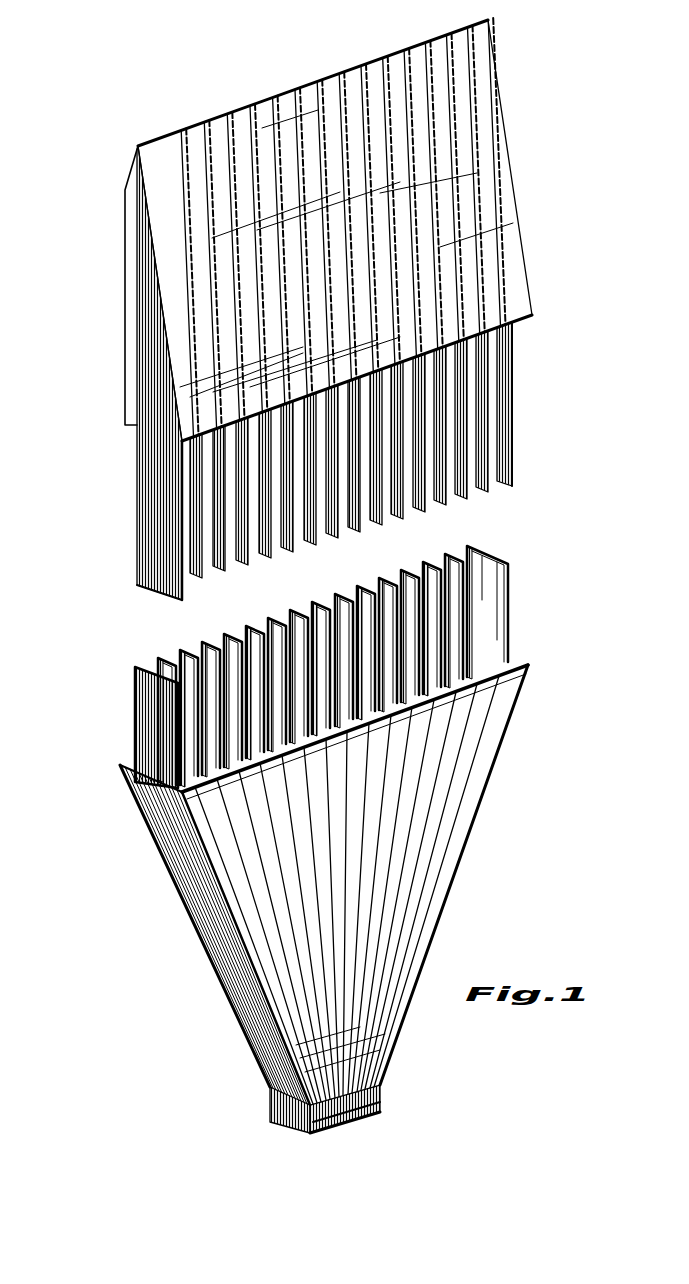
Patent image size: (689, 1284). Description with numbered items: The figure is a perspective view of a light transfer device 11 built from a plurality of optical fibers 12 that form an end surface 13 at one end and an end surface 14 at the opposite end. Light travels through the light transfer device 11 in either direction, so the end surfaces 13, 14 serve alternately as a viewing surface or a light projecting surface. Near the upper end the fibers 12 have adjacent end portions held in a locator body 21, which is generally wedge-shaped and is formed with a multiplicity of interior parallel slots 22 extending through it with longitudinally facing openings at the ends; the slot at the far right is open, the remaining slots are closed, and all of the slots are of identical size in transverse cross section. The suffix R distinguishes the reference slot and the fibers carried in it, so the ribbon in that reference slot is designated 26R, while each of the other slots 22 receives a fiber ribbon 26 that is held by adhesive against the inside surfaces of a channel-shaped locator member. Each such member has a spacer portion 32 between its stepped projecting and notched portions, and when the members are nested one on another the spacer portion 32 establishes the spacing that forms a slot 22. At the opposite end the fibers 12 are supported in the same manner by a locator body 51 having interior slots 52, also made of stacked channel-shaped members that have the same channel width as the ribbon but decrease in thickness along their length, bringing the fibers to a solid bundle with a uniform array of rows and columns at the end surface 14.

The light transfer device 11 is at (328, 309).
The optical fibers 12 is at (523, 414).
The end surface 13 is at (356, 229).
The end surface 14 is at (281, 1129).
The locator body 21 is at (112, 365).
The interior parallel slots 22 is at (253, 134).
The fiber ribbon 26 is at (172, 142).
The end fin 26R is at (148, 265).
The spacer portion 32 is at (211, 140).
The locator body 51 is at (371, 888).
The interior slots 52 is at (492, 668).